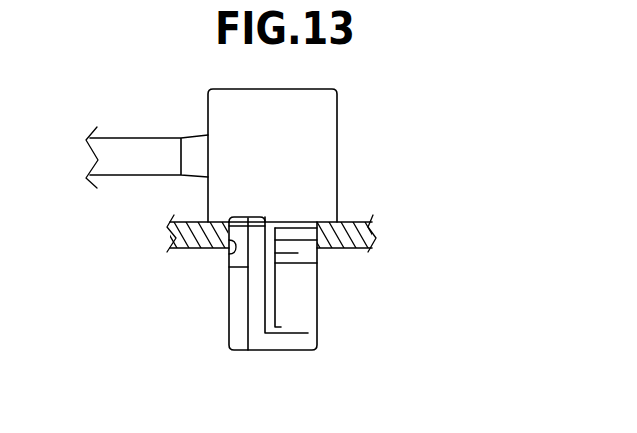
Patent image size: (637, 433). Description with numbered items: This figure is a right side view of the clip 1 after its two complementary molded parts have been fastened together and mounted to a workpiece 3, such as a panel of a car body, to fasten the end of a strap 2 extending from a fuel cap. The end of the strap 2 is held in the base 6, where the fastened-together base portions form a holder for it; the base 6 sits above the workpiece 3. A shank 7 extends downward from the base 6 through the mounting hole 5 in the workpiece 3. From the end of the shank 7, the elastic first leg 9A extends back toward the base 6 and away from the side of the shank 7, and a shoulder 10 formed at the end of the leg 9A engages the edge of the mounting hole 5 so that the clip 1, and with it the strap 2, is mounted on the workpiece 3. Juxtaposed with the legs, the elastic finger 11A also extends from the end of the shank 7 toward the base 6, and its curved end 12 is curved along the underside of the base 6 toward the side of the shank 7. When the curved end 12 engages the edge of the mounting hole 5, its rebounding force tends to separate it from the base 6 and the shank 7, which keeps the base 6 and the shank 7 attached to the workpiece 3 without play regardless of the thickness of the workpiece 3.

The clip 1 is at (372, 108).
The strap 2 is at (136, 152).
The workpiece 3 is at (173, 243).
The mounting hole 5 is at (237, 246).
The base 6 is at (340, 157).
The shank 7 is at (270, 300).
The first leg 9A is at (318, 320).
The shoulder 10 is at (292, 262).
The elastic finger 11A is at (236, 322).
The curved end 12 is at (235, 218).